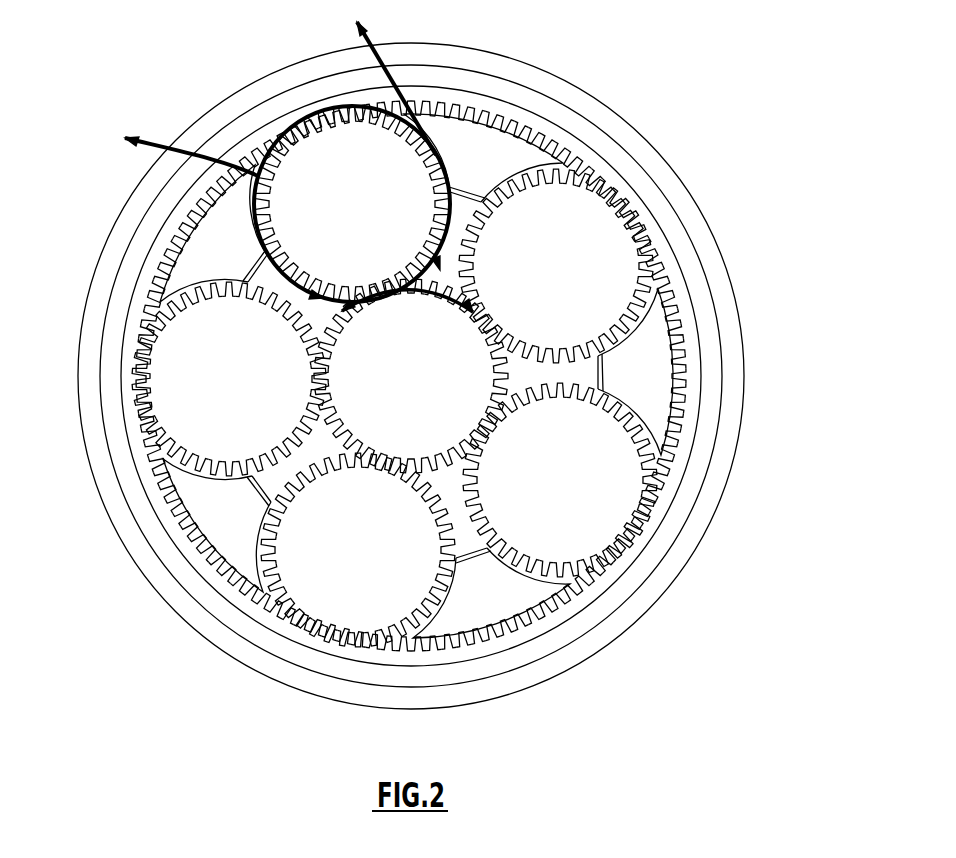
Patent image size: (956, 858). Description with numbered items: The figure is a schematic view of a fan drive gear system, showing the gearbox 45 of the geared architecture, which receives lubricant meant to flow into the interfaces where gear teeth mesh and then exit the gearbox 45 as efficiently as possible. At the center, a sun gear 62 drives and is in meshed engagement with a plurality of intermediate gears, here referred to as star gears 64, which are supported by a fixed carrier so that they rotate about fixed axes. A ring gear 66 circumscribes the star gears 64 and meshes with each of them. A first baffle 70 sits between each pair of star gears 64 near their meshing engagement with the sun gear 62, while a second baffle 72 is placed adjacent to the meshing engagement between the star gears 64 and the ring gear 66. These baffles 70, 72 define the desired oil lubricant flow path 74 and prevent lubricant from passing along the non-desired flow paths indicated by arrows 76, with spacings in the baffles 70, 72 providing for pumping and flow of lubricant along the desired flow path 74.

The gearbox 45 is at (742, 88).
The sun gear 62 is at (398, 389).
The star gear 64 is at (216, 395).
The ring gear 66 is at (677, 310).
The first baffle 70 is at (455, 213).
The second baffle 72 is at (450, 143).
The desired oil lubricant flow path 74 is at (365, 63).
The non-desired flow paths 76 is at (293, 267).